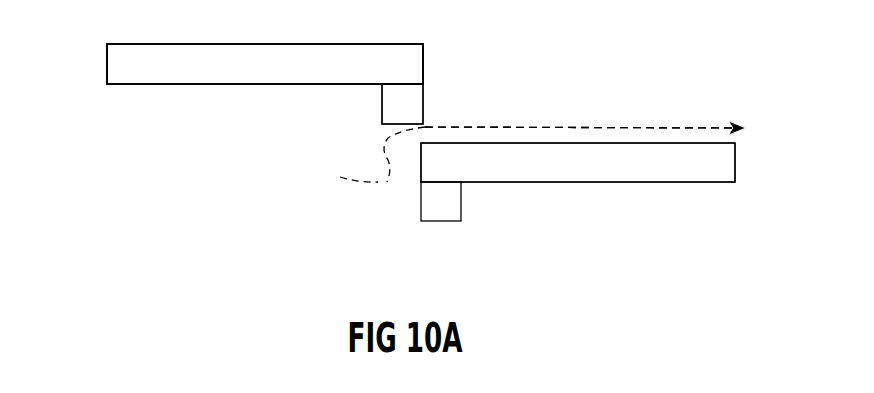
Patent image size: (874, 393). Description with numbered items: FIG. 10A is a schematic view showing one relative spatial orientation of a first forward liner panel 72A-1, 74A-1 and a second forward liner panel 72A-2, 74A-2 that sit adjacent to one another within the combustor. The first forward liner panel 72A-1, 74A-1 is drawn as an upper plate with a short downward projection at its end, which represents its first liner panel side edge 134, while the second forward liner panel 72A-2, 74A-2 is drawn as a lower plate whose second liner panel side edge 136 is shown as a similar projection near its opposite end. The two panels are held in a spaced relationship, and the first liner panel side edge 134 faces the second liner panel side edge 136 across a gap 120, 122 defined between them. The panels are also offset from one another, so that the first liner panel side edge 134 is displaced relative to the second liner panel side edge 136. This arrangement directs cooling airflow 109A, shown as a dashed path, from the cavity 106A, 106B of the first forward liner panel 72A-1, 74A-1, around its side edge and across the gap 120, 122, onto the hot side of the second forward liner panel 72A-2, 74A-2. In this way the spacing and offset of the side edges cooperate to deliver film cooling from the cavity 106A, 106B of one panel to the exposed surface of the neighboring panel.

The first forward liner panel 72A-1 is at (265, 44).
The first forward liner panel 74A-1 is at (265, 64).
The second forward liner panel 72A-2 is at (627, 160).
The second forward liner panel 74A-2 is at (578, 162).
The cavity 106A is at (247, 97).
The cavity 106B is at (265, 64).
The first liner panel side edge 134 is at (424, 105).
The second liner panel side edge 136 is at (420, 200).
The gap 120 is at (445, 111).
The gap 122 is at (581, 127).
The cooling airflow 109A is at (374, 183).